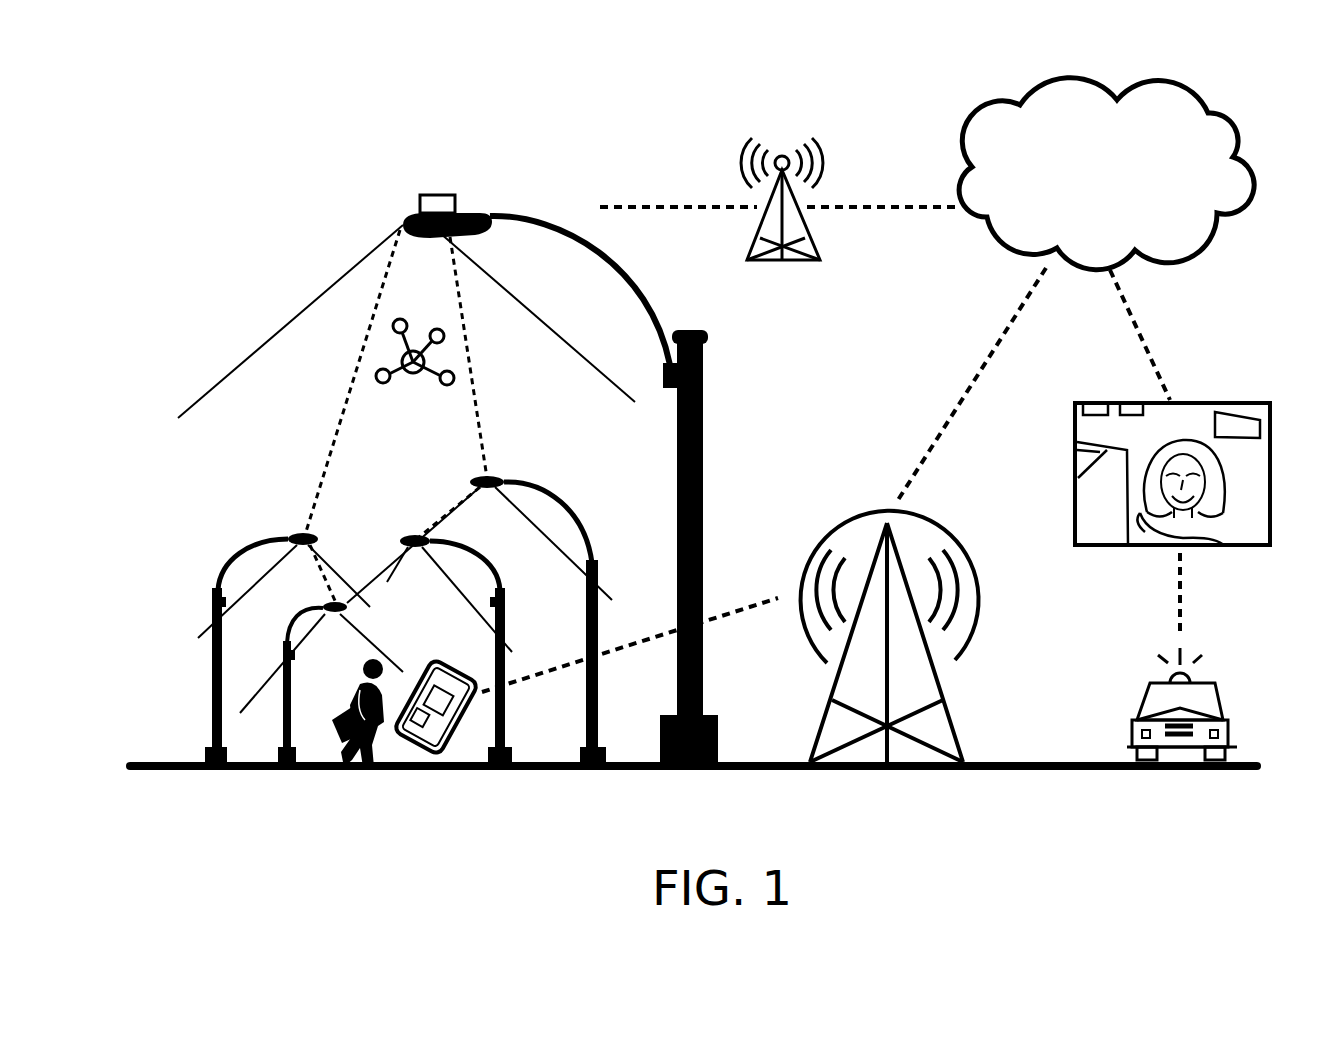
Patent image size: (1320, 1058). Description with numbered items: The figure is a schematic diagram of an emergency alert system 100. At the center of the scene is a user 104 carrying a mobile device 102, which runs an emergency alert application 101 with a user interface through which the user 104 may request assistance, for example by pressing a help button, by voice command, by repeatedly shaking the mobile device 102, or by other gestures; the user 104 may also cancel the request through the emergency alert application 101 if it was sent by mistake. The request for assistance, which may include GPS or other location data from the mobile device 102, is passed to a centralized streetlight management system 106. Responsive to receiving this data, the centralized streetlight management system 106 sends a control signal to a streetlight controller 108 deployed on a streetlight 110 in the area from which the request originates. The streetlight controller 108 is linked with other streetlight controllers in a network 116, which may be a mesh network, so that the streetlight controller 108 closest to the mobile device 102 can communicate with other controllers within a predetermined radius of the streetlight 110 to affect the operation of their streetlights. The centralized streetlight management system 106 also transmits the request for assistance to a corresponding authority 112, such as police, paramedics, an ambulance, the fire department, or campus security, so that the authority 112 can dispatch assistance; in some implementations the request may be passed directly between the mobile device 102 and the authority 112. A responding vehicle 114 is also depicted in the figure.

The emergency alert system 100 is at (316, 120).
The emergency alert application 101 is at (448, 690).
The mobile device 102 is at (424, 712).
The user 104 is at (357, 753).
The centralized streetlight management system 106 is at (1152, 82).
The streetlight controller 108 is at (435, 193).
The streetlight 110 is at (450, 233).
The authority 112 is at (1115, 533).
The emergency vehicle 114 is at (1140, 707).
The network 116 is at (400, 322).